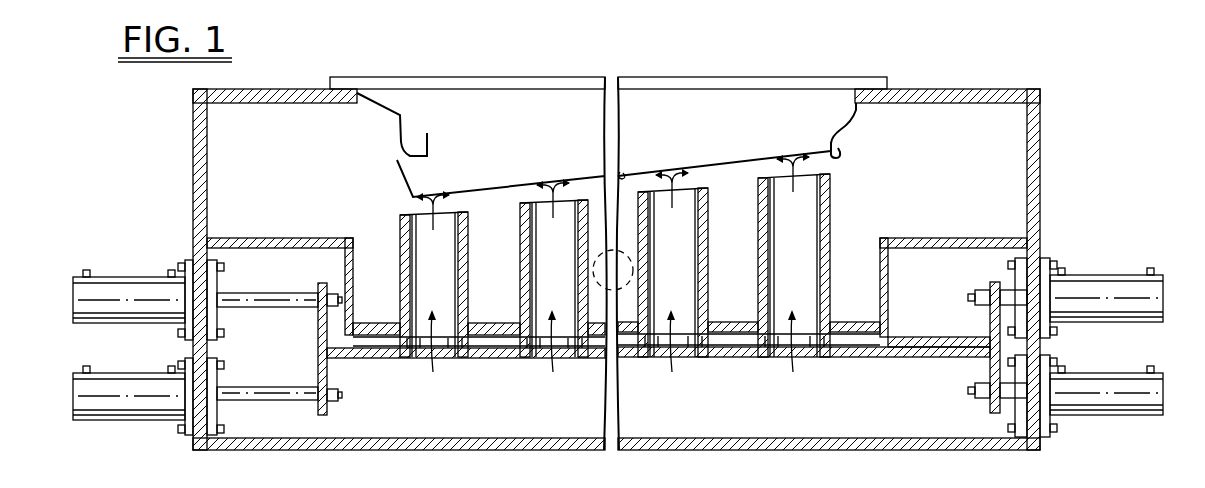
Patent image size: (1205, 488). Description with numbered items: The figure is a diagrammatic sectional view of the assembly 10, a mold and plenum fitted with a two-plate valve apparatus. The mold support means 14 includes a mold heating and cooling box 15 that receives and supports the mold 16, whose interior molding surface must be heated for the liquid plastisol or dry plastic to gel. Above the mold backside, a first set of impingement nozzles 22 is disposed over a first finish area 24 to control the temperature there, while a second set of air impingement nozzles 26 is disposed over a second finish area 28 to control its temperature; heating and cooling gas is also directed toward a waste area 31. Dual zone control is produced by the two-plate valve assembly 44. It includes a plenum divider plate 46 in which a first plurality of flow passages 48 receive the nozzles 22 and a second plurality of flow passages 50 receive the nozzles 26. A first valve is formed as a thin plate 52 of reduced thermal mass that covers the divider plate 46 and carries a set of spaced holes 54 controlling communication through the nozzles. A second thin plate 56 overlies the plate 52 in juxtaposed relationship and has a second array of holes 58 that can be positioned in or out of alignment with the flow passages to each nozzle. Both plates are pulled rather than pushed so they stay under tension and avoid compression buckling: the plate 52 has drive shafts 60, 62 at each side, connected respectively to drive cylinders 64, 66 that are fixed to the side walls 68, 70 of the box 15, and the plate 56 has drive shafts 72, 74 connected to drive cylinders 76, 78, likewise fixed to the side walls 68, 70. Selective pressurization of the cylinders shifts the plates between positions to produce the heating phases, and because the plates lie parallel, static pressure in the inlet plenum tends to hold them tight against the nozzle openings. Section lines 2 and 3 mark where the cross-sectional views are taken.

The assembly 10 is at (822, 78).
The mold support means 14 is at (192, 108).
The mold heating and cooling box 15 is at (246, 450).
The mold 16 is at (400, 172).
The first set of impingement nozzles 22 is at (707, 188).
The first finish area 24 is at (843, 150).
The second set of air impingement nozzles 26 is at (400, 232).
The second finish area 28 is at (501, 190).
The waste area 31 is at (623, 172).
The two-plate valve assembly 44 is at (913, 378).
The plenum divider plate 46 is at (368, 323).
The first plurality of flow passages 48 is at (826, 322).
The second plurality of flow passages 50 is at (468, 324).
The thin plate 52 is at (926, 337).
The spaced holes 54 is at (460, 364).
The second thin plate 56 is at (338, 402).
The second array of holes 58 is at (418, 362).
The drive shaft 60 is at (252, 293).
The drive shaft 62 is at (1003, 282).
The drive cylinder 64 is at (125, 277).
The drive cylinder 66 is at (1103, 275).
The side wall 68 is at (198, 155).
The side wall 70 is at (1037, 157).
The drive shaft 72 is at (258, 387).
The drive shaft 74 is at (1012, 400).
The drive cylinder 76 is at (125, 380).
The drive cylinder 78 is at (1103, 373).
The section line 2- 2 is at (663, 122).
The section line 3- 3 is at (375, 365).